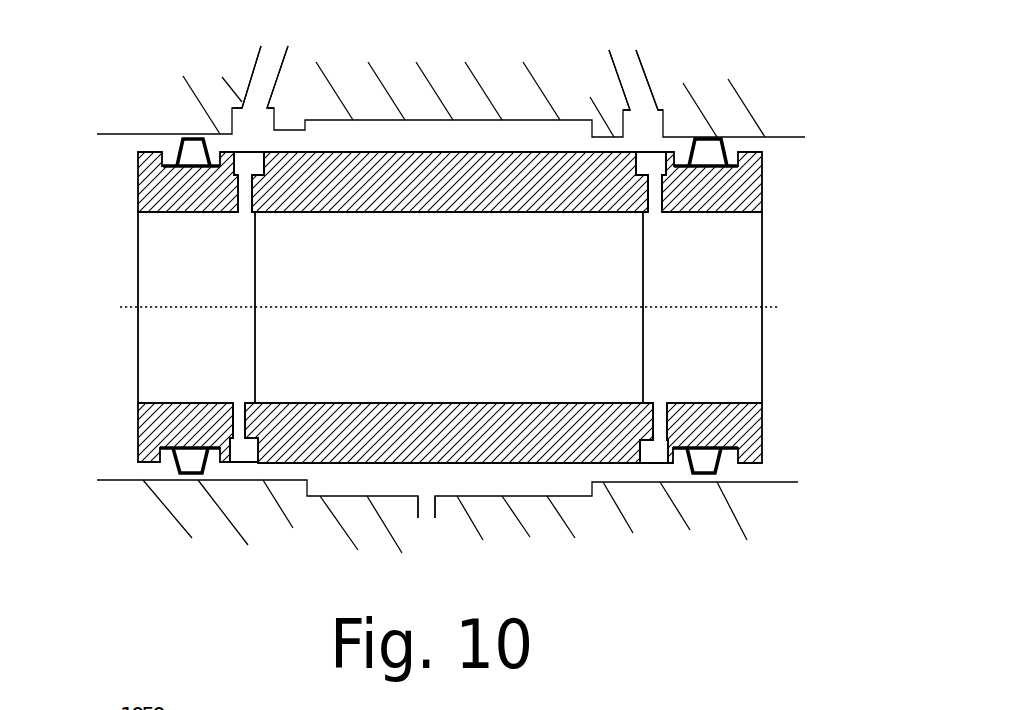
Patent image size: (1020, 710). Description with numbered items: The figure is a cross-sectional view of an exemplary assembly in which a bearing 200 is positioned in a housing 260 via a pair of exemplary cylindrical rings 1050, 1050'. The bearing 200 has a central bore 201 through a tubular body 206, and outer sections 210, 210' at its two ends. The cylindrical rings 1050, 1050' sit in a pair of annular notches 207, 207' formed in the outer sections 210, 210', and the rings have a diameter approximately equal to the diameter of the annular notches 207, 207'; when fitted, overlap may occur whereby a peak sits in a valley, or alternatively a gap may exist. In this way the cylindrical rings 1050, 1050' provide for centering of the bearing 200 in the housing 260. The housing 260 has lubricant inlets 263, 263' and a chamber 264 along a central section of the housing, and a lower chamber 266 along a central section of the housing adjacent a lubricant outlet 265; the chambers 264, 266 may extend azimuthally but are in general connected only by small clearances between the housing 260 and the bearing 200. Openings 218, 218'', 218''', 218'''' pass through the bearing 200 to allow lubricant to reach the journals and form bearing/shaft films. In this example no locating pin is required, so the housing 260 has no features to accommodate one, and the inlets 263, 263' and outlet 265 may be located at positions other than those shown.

The bearing 200 is at (114, 211).
The central bore 201 is at (330, 356).
The tubular body 206 is at (450, 193).
The annular notch 207 is at (145, 277).
The annular notch 207' is at (744, 278).
The outer section 210 is at (188, 307).
The outer section 210' is at (712, 307).
The opening 218 is at (218, 208).
The flow aperture 218'' is at (694, 206).
The flow aperture 218''' is at (696, 409).
The flow aperture 218'''' is at (204, 409).
The housing 260 is at (483, 32).
The lubricant inlet 263 is at (269, 62).
The lubricant inlet 263' is at (626, 67).
The chamber 264 is at (390, 145).
The lubricant outlet 265 is at (425, 503).
The lower chamber 266 is at (397, 493).
The cylindrical ring 1050 is at (134, 275).
The cylindrical ring 1050' is at (758, 278).